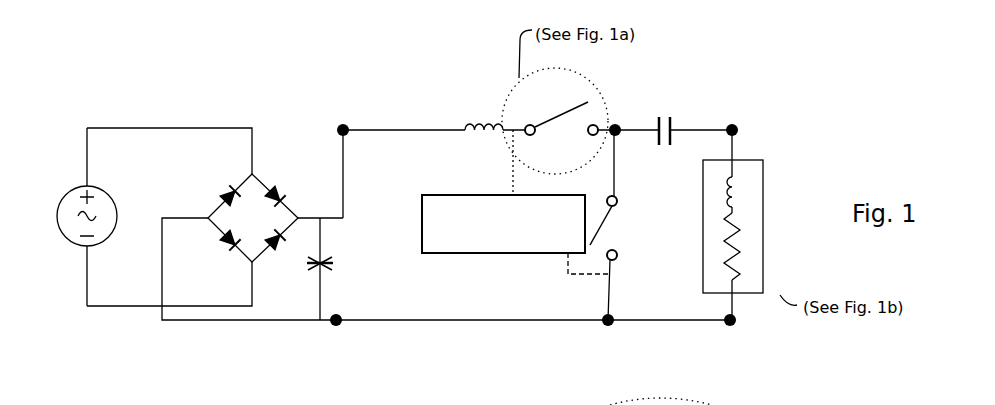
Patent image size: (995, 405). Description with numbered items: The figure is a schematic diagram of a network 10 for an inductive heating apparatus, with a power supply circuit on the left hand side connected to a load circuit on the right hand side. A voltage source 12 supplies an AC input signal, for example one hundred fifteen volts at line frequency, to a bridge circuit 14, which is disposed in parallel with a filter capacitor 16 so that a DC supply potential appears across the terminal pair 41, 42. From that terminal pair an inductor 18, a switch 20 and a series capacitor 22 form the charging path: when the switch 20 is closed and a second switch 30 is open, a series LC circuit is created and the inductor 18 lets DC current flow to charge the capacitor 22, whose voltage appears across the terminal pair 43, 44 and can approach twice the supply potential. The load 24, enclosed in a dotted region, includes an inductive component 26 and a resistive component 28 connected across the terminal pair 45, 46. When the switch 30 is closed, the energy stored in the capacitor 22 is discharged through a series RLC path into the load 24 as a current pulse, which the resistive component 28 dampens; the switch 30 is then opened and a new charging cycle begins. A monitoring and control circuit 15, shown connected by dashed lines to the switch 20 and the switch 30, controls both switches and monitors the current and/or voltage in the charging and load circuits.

The network 10 is at (440, 82).
The voltage source 12 is at (68, 216).
The bridge circuit 14 is at (238, 190).
The monitoring and control circuit 15 is at (483, 253).
The filter capacitor 16 is at (325, 262).
The inductor 18 is at (483, 126).
The switch 20 is at (540, 122).
The series capacitor 22 is at (665, 116).
The load 24 is at (745, 160).
The inductive component 26 is at (742, 205).
The resistive component 28 is at (738, 270).
The switch 30 is at (617, 237).
The terminal 41 is at (346, 126).
The terminal 42 is at (339, 315).
The terminal 43 is at (614, 124).
The terminal 44 is at (610, 323).
The terminal 45 is at (738, 126).
The terminal 46 is at (732, 323).